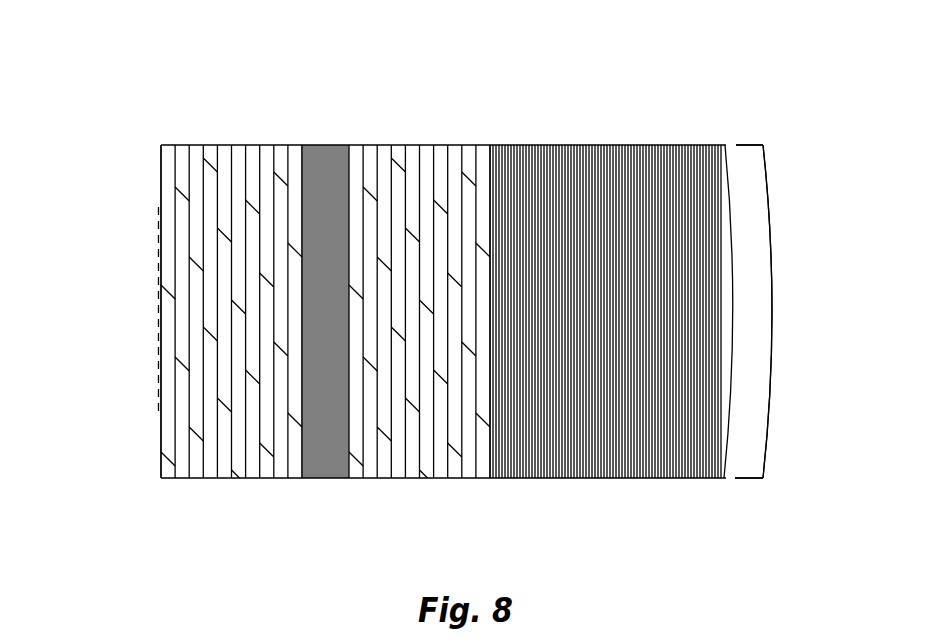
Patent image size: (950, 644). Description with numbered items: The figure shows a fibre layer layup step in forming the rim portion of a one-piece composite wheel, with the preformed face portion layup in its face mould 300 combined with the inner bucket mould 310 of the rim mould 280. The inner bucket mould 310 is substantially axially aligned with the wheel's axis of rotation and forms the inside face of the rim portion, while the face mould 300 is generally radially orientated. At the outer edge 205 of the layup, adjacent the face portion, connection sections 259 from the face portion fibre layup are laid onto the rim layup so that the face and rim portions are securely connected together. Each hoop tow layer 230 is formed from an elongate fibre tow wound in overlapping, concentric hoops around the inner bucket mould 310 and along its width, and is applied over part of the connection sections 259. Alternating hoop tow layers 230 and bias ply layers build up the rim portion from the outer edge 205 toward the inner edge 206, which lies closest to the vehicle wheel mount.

The outer edge 205 is at (132, 364).
The face mould 300 is at (132, 268).
The connection sections 259 is at (227, 457).
The hoop tow layer 230 is at (325, 467).
The inner bucket mould 310 is at (234, 131).
The rim mould 280 is at (789, 264).
The inner edge 206 is at (789, 360).